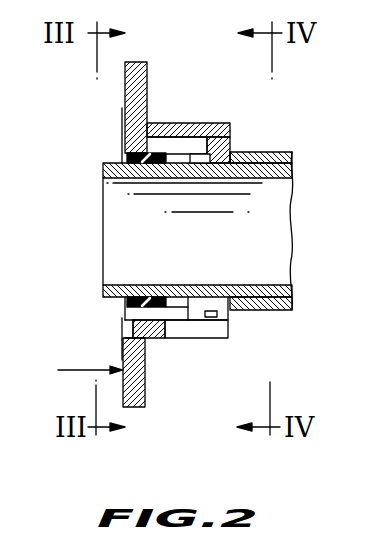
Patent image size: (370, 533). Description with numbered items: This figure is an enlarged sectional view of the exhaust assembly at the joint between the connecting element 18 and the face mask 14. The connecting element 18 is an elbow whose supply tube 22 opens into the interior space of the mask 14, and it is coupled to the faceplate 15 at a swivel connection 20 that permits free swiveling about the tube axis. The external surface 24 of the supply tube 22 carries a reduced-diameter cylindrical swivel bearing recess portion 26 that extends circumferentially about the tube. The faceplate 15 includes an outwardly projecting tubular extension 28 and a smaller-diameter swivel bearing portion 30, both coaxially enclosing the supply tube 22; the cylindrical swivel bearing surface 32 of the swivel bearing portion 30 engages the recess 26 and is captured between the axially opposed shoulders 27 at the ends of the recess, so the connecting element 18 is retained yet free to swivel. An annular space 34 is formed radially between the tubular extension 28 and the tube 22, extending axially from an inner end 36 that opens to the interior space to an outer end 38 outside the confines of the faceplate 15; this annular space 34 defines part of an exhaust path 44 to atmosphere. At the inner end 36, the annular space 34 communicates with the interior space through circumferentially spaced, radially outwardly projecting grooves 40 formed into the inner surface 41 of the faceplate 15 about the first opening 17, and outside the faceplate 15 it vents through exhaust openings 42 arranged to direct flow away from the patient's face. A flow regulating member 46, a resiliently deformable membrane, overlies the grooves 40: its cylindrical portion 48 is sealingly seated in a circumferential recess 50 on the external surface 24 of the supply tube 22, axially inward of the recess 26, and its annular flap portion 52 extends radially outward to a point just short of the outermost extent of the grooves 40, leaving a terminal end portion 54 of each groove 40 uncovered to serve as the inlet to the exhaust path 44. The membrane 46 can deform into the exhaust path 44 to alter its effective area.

The face mask 14 is at (146, 396).
The faceplate 15 is at (147, 63).
The first opening 17 is at (122, 153).
The connecting element 18 is at (292, 276).
The swivel connection 20 is at (233, 148).
The supply tube 22 is at (282, 231).
The external surface 24 is at (265, 152).
The swivel bearing recess portion 26 is at (212, 152).
The shoulders 27 is at (225, 297).
The tubular extension 28 is at (200, 150).
The swivel bearing portion 30 is at (250, 183).
The swivel bearing surface 32 is at (180, 194).
The annular space 34 is at (183, 336).
The inner end 36 is at (123, 138).
The outer end 38 is at (218, 314).
The grooves 40 is at (143, 340).
The inner surface 41 is at (75, 370).
The exhaust openings 42 is at (214, 338).
The exhaust path 44 is at (147, 146).
The flow regulating member 46 is at (147, 302).
The cylindrical portion 48 is at (158, 305).
The circumferential recess 50 is at (125, 292).
The annular flap portion 52 is at (123, 318).
The terminal end portion 54 is at (125, 345).